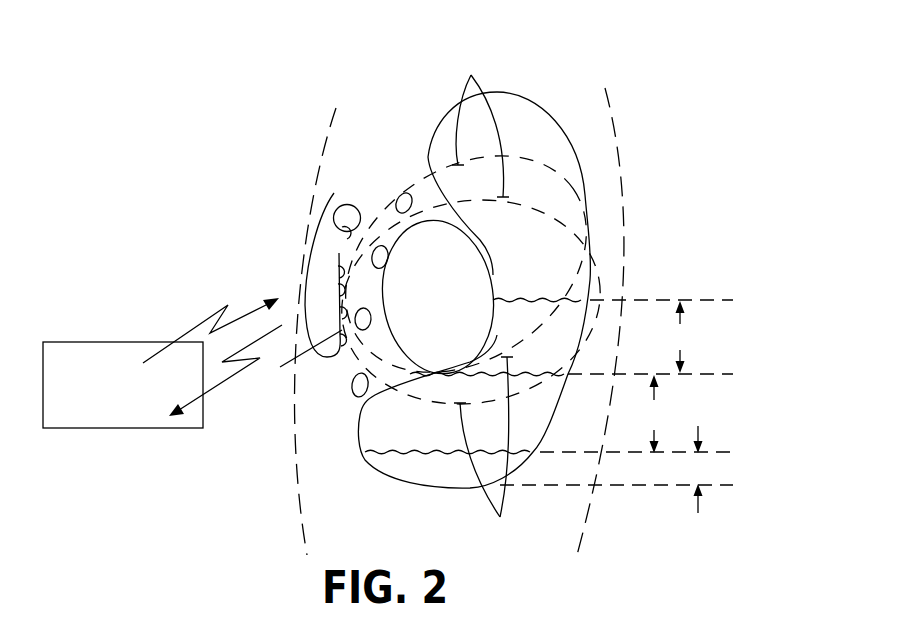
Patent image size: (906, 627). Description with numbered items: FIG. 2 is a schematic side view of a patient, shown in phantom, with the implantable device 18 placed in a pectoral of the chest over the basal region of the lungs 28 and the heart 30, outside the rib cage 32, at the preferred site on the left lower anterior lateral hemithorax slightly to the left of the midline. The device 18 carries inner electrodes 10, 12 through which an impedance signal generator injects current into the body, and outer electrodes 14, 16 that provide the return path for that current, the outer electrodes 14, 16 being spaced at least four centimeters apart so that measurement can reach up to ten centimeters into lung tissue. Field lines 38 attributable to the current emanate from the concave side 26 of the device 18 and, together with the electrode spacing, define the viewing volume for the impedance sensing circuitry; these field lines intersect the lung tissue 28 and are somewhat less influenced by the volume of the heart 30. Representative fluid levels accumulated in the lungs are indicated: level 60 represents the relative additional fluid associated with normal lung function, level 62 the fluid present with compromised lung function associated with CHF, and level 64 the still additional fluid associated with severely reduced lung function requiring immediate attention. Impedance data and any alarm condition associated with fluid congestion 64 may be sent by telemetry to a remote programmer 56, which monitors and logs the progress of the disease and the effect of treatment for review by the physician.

The inner electrode 10 is at (287, 279).
The inner electrode 12 is at (336, 291).
The outer electrode 14 is at (339, 253).
The outer electrode 16 is at (327, 356).
The device 18 is at (338, 230).
The concave side 26 is at (280, 367).
The lungs 28 is at (535, 125).
The heart 30 is at (437, 258).
The rib cage 32 is at (405, 194).
The field lines 38 is at (484, 299).
The remote programmer 56 is at (123, 342).
The fluid level 60 is at (616, 469).
The fluid level 62 is at (650, 413).
The fluid level 64 is at (661, 336).